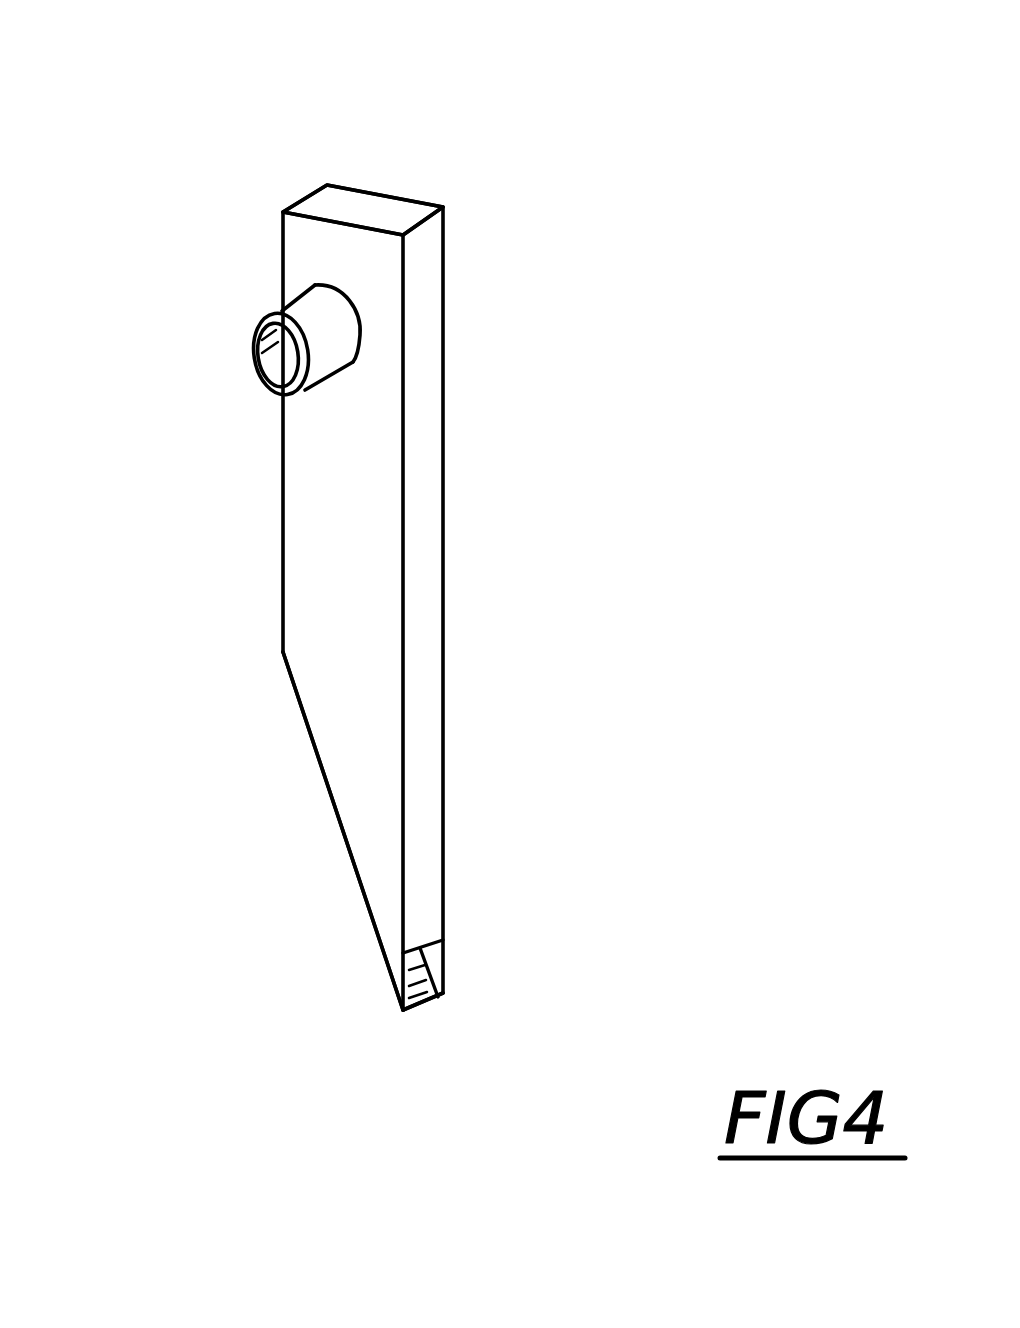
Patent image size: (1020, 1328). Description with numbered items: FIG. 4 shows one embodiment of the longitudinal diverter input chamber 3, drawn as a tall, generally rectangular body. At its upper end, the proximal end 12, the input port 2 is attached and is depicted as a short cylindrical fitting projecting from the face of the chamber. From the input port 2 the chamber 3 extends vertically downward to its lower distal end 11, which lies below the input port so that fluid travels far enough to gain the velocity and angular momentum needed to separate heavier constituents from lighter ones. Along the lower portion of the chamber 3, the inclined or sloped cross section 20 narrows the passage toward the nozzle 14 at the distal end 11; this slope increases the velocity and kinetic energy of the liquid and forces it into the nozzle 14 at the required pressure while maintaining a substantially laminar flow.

The input port 2 is at (260, 383).
The longitudinal input chamber 3 is at (443, 577).
The distal end 11 is at (420, 1007).
The proximal end 12 is at (308, 197).
The nozzle 14 is at (443, 965).
The inclined or sloped cross section 20 is at (330, 795).